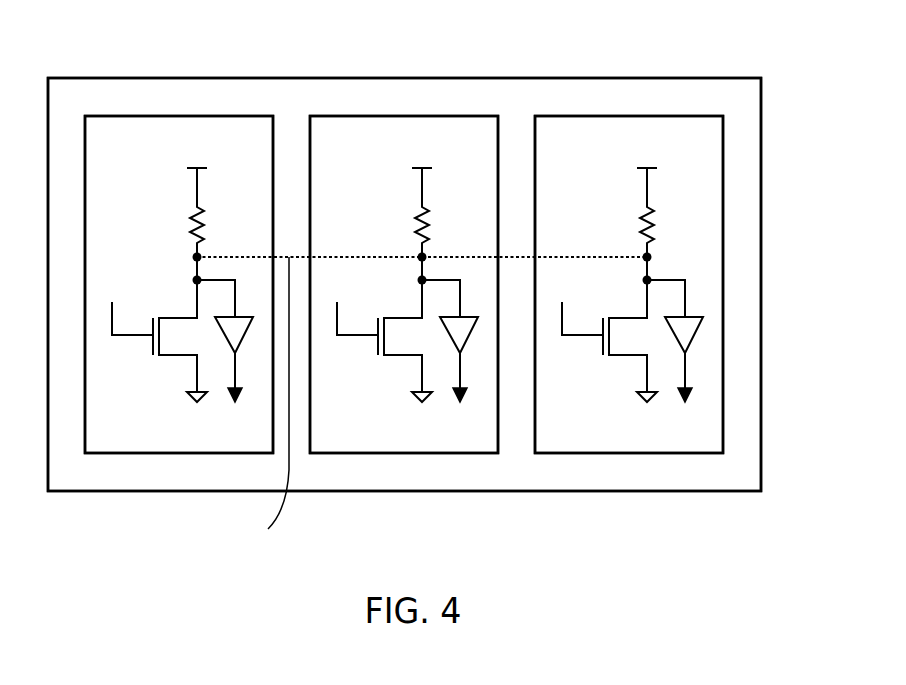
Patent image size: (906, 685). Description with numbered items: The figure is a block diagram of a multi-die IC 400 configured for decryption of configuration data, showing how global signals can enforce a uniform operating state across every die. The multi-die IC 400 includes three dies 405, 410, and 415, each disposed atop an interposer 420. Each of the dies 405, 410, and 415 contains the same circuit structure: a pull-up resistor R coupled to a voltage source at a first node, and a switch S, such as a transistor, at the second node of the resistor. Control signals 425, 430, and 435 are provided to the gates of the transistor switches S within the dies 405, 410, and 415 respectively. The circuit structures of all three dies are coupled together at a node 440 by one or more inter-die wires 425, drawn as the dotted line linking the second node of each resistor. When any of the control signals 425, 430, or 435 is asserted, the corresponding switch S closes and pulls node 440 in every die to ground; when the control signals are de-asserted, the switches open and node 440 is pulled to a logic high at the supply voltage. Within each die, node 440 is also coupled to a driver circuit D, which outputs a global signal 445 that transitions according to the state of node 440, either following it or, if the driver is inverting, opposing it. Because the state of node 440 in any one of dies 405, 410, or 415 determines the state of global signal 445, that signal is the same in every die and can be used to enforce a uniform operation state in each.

The multi-die IC 400 is at (431, 38).
The die 405 is at (180, 453).
The die 410 is at (403, 453).
The die 415 is at (638, 453).
The interposer 420 is at (713, 491).
The inter-die wire 425 is at (198, 398).
The control signal 430 is at (355, 306).
The control signal 435 is at (580, 306).
The node 440 is at (193, 257).
The global signal 445 is at (454, 353).